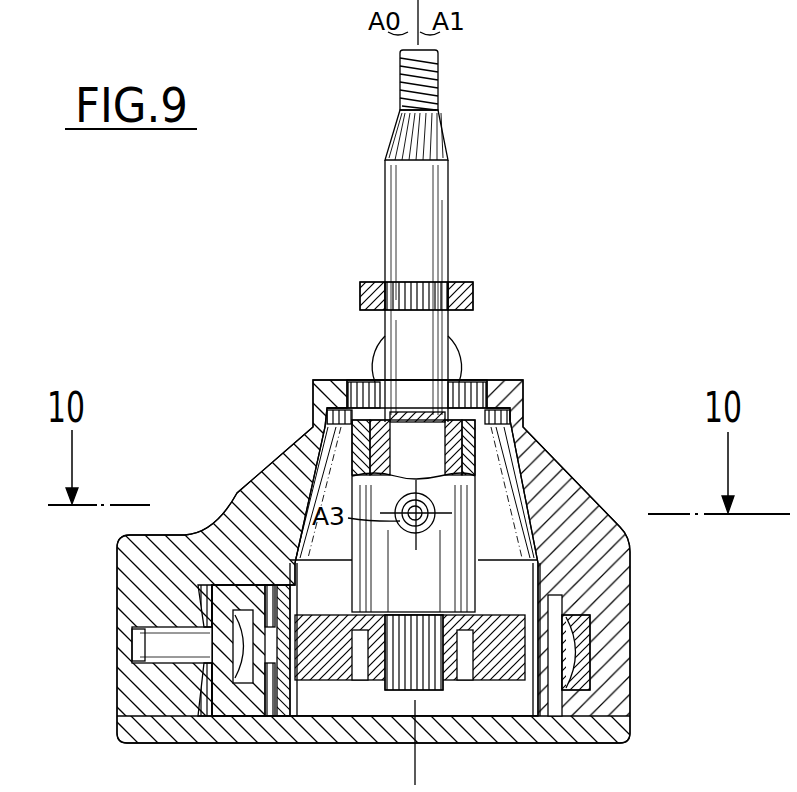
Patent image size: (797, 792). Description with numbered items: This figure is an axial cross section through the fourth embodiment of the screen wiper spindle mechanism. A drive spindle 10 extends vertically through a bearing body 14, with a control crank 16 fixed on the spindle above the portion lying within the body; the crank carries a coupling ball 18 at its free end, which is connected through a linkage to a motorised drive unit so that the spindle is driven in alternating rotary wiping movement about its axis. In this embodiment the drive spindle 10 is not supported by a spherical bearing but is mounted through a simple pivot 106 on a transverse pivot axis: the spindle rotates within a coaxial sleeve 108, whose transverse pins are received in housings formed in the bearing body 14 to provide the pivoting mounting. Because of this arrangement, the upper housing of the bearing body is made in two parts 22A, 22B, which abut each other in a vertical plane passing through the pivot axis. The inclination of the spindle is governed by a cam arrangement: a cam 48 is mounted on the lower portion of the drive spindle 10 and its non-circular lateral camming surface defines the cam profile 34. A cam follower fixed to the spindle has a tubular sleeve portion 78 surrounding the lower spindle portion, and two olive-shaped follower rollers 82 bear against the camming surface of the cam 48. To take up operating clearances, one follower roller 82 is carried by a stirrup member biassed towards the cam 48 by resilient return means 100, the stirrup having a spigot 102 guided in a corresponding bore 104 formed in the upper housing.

The drive spindle 10 is at (440, 232).
The control crank 16 is at (473, 297).
The coupling ball 18 is at (376, 352).
The bearing body 14 is at (98, 590).
The upper housing part 22A is at (270, 497).
The upper housing part 22B is at (583, 525).
The coaxial sleeve 108 is at (482, 437).
The pivot 106 is at (444, 505).
The tubular sleeve portion 78 is at (462, 545).
The cam profile 34 is at (330, 597).
The cam 48 is at (330, 663).
The resilient return means 100 is at (215, 672).
The spigot 102 is at (165, 650).
The bore 104 is at (140, 655).
The follower roller 82 is at (575, 658).